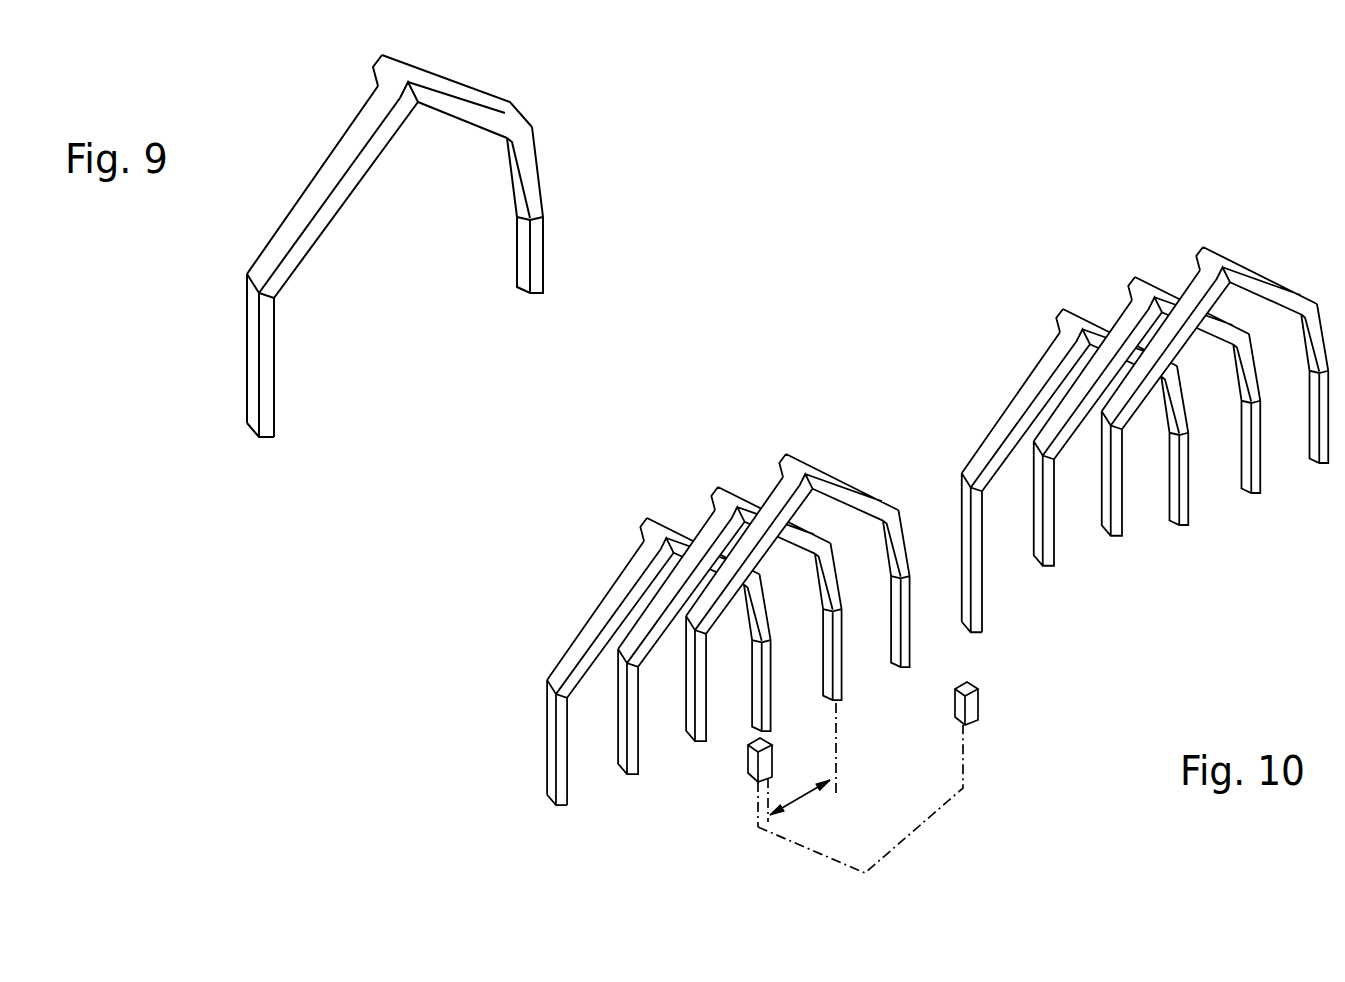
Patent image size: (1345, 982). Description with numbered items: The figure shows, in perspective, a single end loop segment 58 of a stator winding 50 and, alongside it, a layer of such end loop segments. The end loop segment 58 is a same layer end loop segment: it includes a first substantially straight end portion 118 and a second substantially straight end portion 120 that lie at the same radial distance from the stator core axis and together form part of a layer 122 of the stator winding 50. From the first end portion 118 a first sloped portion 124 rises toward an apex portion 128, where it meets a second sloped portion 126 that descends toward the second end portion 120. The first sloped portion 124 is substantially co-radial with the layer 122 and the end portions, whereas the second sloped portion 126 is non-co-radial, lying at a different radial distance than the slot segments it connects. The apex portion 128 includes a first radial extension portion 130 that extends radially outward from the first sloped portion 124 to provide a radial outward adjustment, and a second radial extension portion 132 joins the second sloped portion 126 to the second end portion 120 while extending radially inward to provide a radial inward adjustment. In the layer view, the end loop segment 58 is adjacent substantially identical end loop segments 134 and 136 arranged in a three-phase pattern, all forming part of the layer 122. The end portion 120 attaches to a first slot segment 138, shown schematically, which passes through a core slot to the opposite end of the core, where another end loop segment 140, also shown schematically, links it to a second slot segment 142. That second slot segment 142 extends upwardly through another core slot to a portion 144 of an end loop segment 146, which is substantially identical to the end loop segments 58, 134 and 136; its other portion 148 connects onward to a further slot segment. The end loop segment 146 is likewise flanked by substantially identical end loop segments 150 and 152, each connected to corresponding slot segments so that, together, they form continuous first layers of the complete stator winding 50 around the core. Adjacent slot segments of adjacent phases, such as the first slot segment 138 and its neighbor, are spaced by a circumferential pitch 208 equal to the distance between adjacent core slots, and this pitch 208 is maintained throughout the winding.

In FIG. 10, the stator winding 50 is at (863, 532).
In FIG. 9, the end loop segment 58 is at (388, 241).
In FIG. 10, the end loop segment 58 is at (658, 661).
In FIG. 9, the first substantially straight end portion 118 is at (260, 355).
In FIG. 10, the first substantially straight end portion 118 is at (557, 742).
In FIG. 9, the second substantially straight end portion 120 is at (530, 255).
In FIG. 10, the second substantially straight end portion 120 is at (761, 685).
In FIG. 9, the layer 122 is at (260, 430).
In FIG. 10, the layer 122 is at (557, 800).
In FIG. 9, the first sloped portion 124 is at (332, 192).
In FIG. 10, the first sloped portion 124 is at (610, 619).
In FIG. 9, the second sloped portion 126 is at (457, 96).
In FIG. 10, the second sloped portion 126 is at (703, 551).
In FIG. 9, the apex portion 128 is at (395, 78).
In FIG. 10, the apex portion 128 is at (656, 535).
In FIG. 9, the first radial extension portion 130 is at (329, 195).
In FIG. 10, the first radial extension portion 130 is at (608, 622).
In FIG. 9, the second radial extension portion 132 is at (525, 173).
In FIG. 10, the second radial extension portion 132 is at (757, 608).
In FIG. 10, the end loop segment 134 is at (745, 477).
In FIG. 10, the end loop segment 136 is at (810, 463).
In FIG. 10, the first slot segment 138 is at (750, 740).
In FIG. 10, the end loop segment 140 is at (925, 825).
In FIG. 10, the second slot segment 142 is at (981, 624).
In FIG. 10, the portion 144 is at (972, 552).
In FIG. 10, the end loop segment 146 is at (1069, 400).
In FIG. 10, the portion 148 is at (1174, 445).
In FIG. 10, the end loop segment 150 is at (1135, 280).
In FIG. 10, the end loop segment 152 is at (1278, 280).
In FIG. 10, the circumferential pitch 208 is at (802, 800).